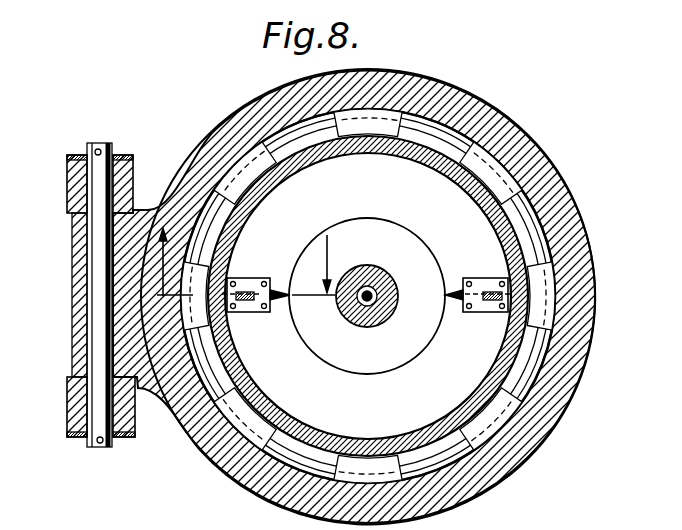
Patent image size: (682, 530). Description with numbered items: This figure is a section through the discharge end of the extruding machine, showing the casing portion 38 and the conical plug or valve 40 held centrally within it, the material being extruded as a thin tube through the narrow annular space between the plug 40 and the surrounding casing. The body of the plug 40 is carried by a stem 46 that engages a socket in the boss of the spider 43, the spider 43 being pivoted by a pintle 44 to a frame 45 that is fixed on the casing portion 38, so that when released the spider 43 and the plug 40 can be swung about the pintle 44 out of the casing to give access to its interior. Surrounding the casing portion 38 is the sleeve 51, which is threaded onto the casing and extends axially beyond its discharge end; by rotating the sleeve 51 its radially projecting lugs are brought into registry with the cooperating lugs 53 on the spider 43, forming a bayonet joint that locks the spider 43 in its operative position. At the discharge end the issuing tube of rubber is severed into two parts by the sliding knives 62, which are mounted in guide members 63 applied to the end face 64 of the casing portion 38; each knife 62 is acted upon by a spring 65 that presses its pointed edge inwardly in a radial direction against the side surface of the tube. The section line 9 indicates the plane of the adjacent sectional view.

The section line of Fig. 9 is at (242, 262).
The casing portion 38 is at (388, 193).
The plug or valve 40 is at (408, 245).
The spider 43 is at (213, 138).
The pintle 44 is at (98, 176).
The frame 45 is at (123, 180).
The stem 46 is at (375, 315).
The sleeve 51 is at (507, 230).
The lugs 53 is at (376, 118).
The sliding knives 62 is at (275, 282).
The guide members 63 is at (483, 283).
The end face 64 is at (527, 362).
The spring 65 is at (492, 302).